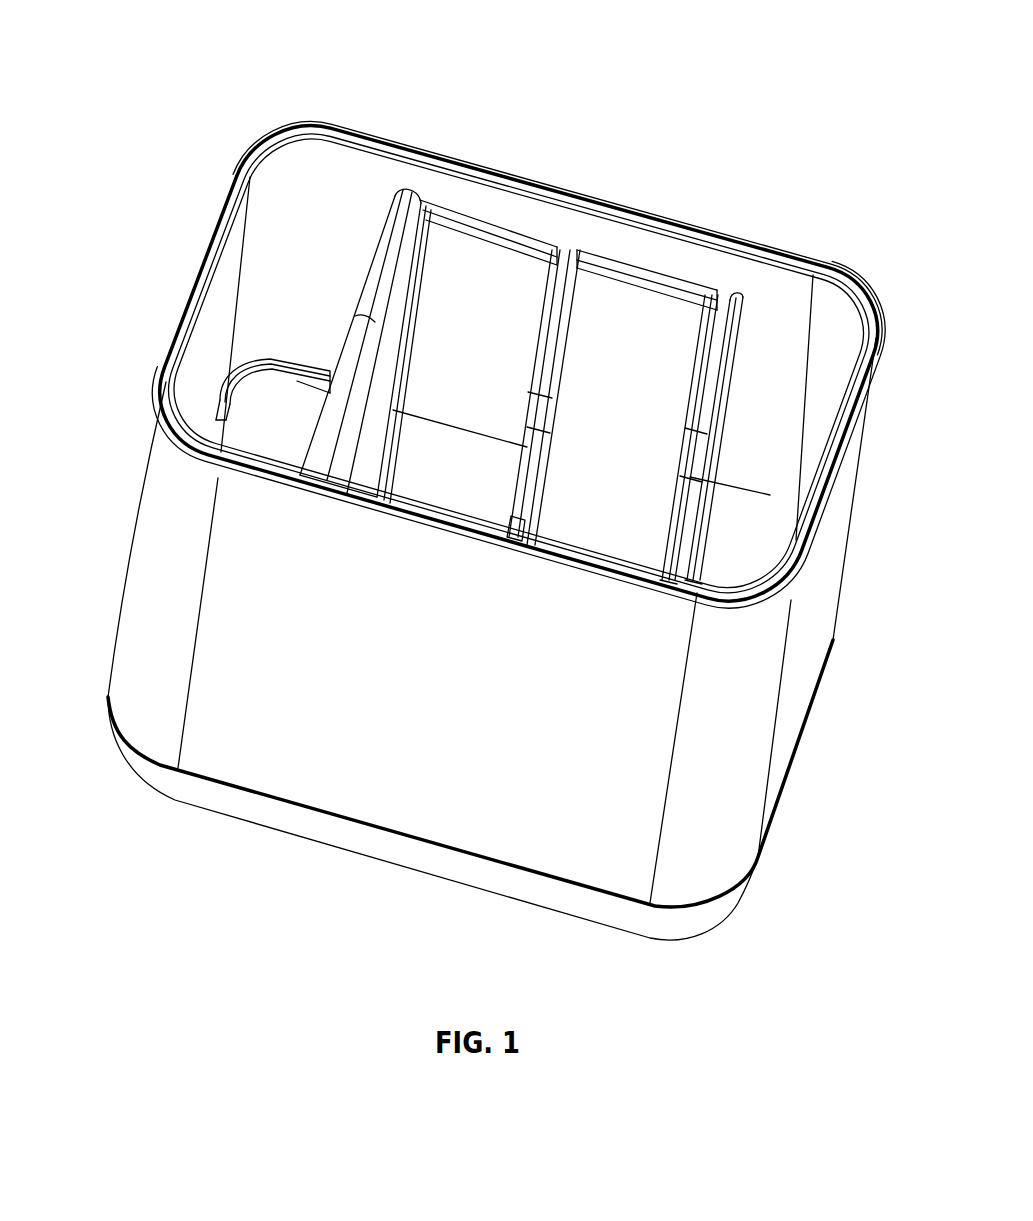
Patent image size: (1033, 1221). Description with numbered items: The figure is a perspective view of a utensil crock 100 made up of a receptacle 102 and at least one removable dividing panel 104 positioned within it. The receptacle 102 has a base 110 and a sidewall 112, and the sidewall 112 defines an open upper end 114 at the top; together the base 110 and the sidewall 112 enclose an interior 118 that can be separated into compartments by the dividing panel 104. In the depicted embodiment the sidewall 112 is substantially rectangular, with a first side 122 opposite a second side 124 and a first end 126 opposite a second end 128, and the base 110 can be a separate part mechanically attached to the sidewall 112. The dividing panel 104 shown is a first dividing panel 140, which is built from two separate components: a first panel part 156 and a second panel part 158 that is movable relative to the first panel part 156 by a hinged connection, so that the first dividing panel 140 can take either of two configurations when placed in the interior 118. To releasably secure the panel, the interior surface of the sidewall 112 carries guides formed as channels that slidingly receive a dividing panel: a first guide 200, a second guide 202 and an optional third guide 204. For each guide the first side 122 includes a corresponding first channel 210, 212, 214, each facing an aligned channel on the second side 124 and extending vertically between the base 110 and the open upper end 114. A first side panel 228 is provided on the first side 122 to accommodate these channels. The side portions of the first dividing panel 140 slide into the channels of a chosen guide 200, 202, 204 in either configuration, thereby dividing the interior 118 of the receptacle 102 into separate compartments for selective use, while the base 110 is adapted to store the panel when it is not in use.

The utensil crock 100 is at (124, 52).
The receptacle 102 is at (147, 607).
The dividing panel 104 is at (392, 206).
The first dividing panel 140 is at (355, 150).
The base 110 is at (333, 833).
The sidewall 112 is at (820, 620).
The open upper end 114 is at (597, 227).
The interior 118 is at (831, 321).
The first side 122 is at (478, 193).
The second side 124 is at (502, 827).
The first end 126 is at (218, 294).
The second end 128 is at (840, 487).
The first panel part 156 is at (370, 375).
The second panel part 158 is at (259, 427).
The first guide 200 is at (383, 461).
The second guide 202 is at (543, 414).
The third guide 204 is at (720, 380).
The first channel 210 is at (418, 259).
The first channel 212 is at (570, 339).
The first channel 214 is at (724, 296).
The first side panel 228 is at (633, 307).